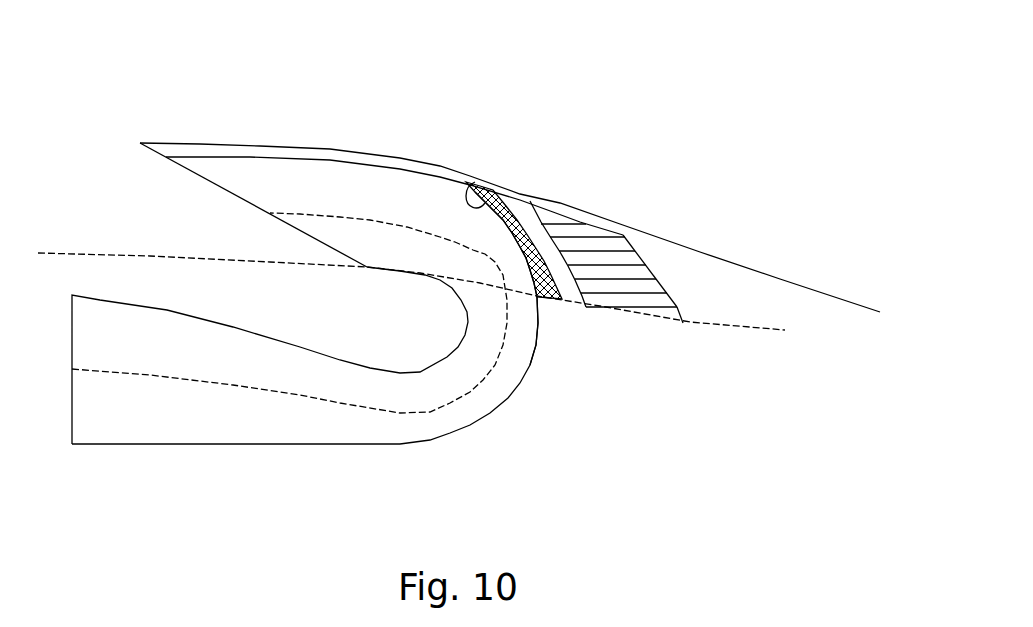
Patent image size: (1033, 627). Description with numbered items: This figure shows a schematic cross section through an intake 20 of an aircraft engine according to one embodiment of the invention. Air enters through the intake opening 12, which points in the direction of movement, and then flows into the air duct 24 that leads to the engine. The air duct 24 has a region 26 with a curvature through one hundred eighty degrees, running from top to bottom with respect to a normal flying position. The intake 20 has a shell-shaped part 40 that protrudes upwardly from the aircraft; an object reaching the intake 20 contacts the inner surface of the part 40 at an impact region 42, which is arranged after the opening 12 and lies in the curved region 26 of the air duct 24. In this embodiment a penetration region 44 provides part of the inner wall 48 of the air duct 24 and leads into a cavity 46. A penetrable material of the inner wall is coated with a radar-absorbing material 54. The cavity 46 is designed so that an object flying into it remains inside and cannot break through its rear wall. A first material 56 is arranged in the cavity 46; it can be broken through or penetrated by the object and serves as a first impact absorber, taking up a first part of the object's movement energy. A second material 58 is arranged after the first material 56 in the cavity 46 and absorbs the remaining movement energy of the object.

The intake opening 12 is at (256, 207).
The intake 20 is at (613, 117).
The air duct 24 is at (283, 422).
The curved region 26 is at (518, 378).
The shell-shaped part 40 is at (402, 158).
The impact region 42 is at (472, 188).
The penetration region 44 is at (699, 97).
The cavity 46 is at (610, 270).
The inner wall 48 is at (537, 326).
The radar-absorbing material 54 is at (512, 203).
The first material 56 is at (543, 240).
The second material 58 is at (610, 252).